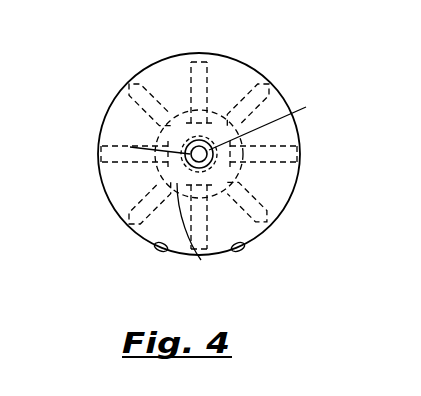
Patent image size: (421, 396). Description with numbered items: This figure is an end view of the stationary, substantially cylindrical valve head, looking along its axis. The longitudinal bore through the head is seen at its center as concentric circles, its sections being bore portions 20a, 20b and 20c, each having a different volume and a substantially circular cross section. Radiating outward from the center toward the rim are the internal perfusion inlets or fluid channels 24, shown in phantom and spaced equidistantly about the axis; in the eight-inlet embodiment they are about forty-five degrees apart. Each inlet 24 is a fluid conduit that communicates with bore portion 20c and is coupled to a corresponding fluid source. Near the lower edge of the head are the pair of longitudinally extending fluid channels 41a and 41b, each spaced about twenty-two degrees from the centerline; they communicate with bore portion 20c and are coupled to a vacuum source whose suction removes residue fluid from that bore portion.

The perfusion inlets or fluid channels 24 is at (143, 90).
The bore portion 20a is at (130, 147).
The bore portion 20b is at (306, 107).
The bore portion 20c is at (201, 260).
The fluid channel 41a is at (156, 249).
The fluid channel 41b is at (244, 248).